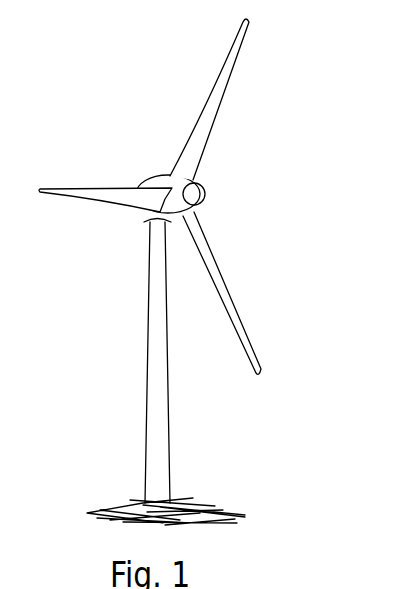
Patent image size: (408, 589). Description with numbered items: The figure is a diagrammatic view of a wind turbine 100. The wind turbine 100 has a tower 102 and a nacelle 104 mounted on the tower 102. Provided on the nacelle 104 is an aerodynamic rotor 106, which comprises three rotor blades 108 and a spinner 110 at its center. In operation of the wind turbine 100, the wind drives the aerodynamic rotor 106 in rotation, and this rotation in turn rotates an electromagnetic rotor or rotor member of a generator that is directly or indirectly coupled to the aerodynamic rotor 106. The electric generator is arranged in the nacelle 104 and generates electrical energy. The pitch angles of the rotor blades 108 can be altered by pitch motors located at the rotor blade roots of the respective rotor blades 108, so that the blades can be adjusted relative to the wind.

The wind turbine 100 is at (183, 261).
The tower 102 is at (160, 423).
The nacelle 104 is at (157, 182).
The aerodynamic rotor 106 is at (183, 196).
The rotor blades 108 is at (217, 92).
The spinner 110 is at (238, 151).